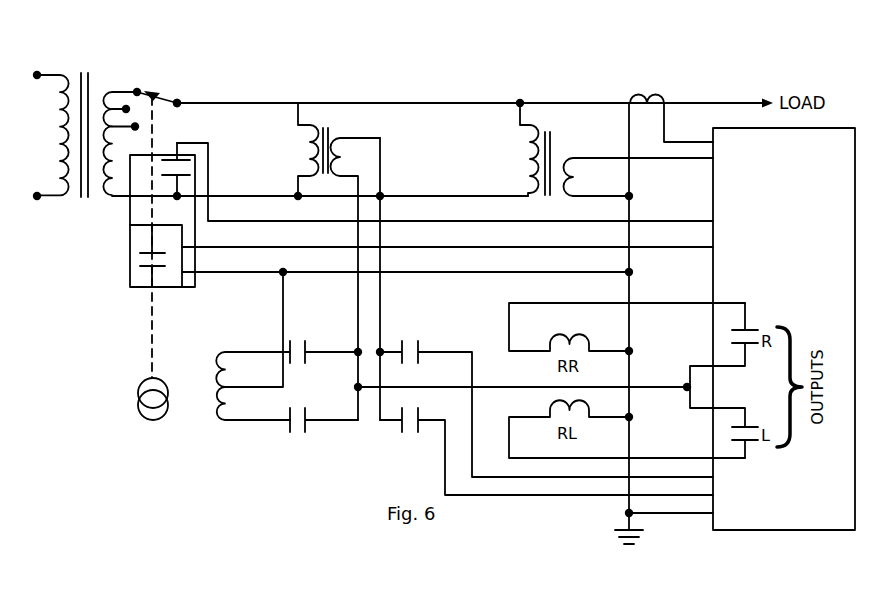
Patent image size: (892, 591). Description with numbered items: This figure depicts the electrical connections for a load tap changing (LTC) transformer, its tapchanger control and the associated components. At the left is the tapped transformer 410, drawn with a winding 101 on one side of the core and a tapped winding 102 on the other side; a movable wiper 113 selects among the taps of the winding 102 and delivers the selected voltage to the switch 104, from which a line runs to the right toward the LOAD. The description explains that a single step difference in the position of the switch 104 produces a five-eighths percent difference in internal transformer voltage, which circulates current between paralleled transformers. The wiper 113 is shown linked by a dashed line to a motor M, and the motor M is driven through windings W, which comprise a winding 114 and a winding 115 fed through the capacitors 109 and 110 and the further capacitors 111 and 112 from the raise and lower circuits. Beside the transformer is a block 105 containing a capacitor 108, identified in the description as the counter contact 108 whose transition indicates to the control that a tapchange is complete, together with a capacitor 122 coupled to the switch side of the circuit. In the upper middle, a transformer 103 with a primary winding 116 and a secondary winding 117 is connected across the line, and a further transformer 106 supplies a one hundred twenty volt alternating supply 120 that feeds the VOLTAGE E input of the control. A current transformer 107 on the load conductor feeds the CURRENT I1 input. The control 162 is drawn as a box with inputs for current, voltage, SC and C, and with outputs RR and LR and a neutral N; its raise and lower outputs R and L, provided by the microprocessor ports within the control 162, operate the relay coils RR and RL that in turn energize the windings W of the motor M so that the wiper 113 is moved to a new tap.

The autotransformer 410 is at (86, 127).
The primary winding 101 is at (57, 202).
The tapped secondary winding 102 is at (103, 202).
The tap selector switch wiper 113 is at (143, 86).
The switch 104 is at (174, 100).
The capacitor 122 is at (160, 155).
The filter network 105 is at (398, 234).
The counter contact 108 is at (140, 249).
The transformer 103 is at (317, 127).
The primary winding 116 is at (302, 148).
The secondary winding 117 is at (336, 137).
The voltage sensing transformer 106 is at (611, 127).
The 120 VAC supply 120 is at (639, 157).
The current transformer 107 is at (650, 92).
The motor winding 114 is at (237, 378).
The motor winding 115 is at (237, 410).
The capacitor 109 is at (314, 351).
The capacitor 110 is at (311, 418).
The capacitor 111 is at (421, 351).
The capacitor 112 is at (421, 418).
The control 162 is at (722, 535).
The motor M is at (136, 397).
The motor windings W is at (233, 354).